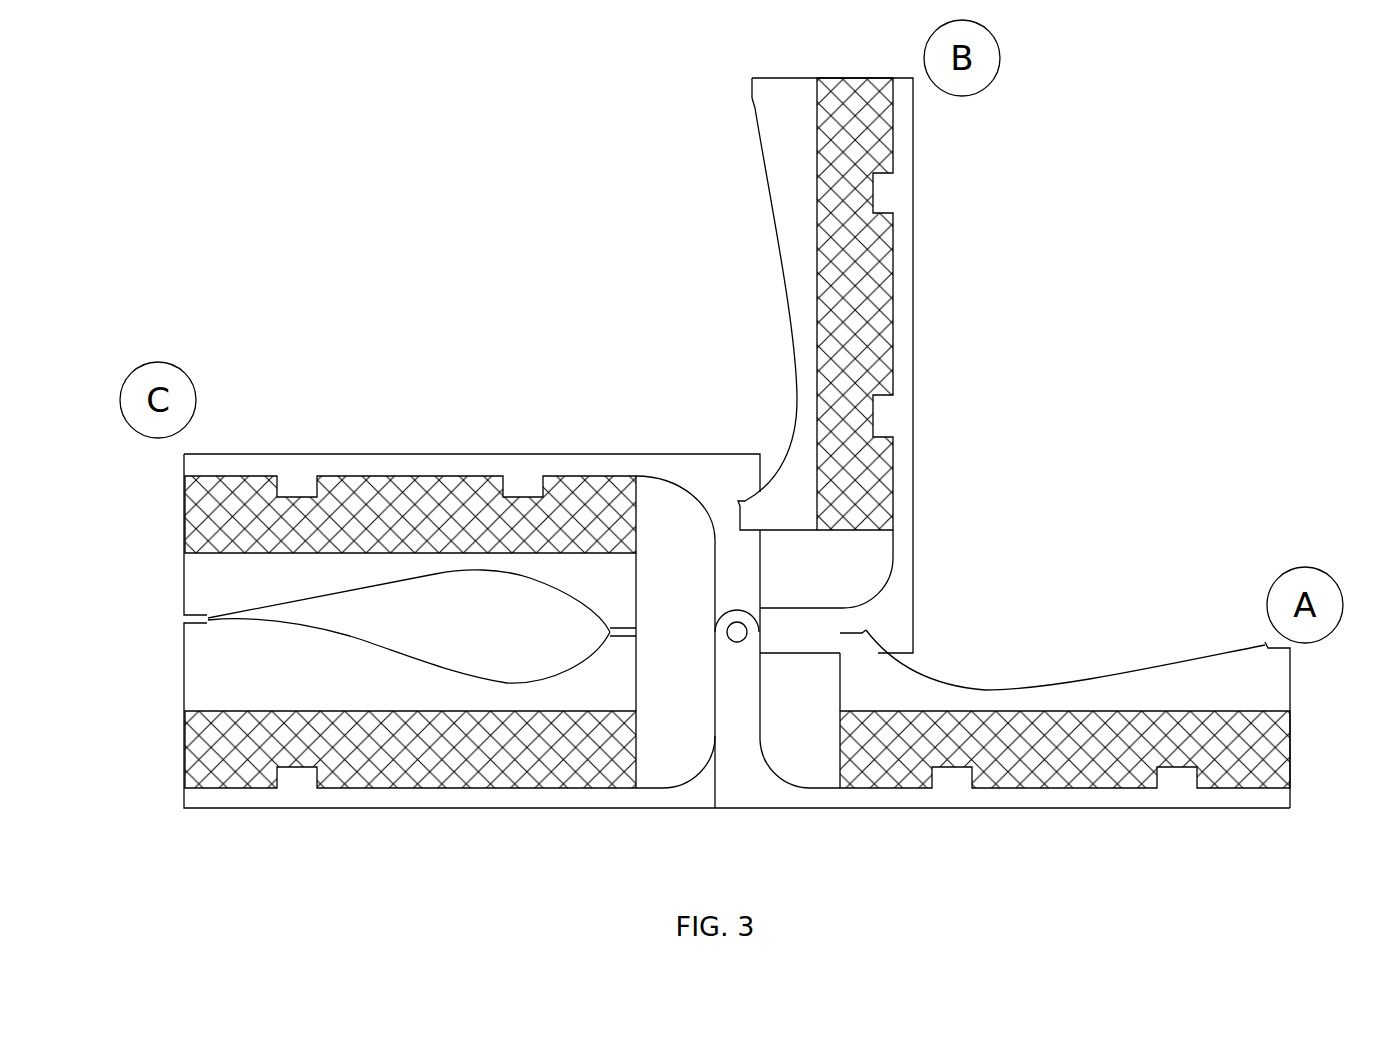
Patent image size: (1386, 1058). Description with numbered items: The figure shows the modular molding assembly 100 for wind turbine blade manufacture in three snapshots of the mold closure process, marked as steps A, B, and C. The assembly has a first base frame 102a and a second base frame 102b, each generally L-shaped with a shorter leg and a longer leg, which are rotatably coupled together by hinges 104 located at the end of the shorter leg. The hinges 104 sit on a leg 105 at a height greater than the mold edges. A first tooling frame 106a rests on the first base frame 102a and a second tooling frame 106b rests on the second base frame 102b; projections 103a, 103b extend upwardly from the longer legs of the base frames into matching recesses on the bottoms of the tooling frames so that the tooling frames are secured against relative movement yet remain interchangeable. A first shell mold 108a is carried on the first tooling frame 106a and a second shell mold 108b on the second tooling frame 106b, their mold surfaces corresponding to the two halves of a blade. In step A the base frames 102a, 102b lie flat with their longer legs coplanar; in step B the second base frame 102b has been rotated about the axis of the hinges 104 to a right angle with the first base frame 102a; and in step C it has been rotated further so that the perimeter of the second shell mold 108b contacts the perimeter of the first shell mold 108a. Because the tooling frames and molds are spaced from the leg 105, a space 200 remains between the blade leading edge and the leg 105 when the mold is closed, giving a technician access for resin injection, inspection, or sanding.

The modular molding assembly 100 is at (256, 113).
The first base frame 102a is at (482, 800).
The second base frame 102b is at (482, 468).
The projections 103a is at (295, 782).
The projections 103b is at (948, 778).
The hinges 104 is at (733, 630).
The leg 105 is at (742, 755).
The first tooling frame 106a is at (203, 748).
The second tooling frame 106b is at (205, 517).
The first shell mold 108a is at (487, 680).
The second shell mold 108b is at (490, 573).
The space 200 is at (680, 602).